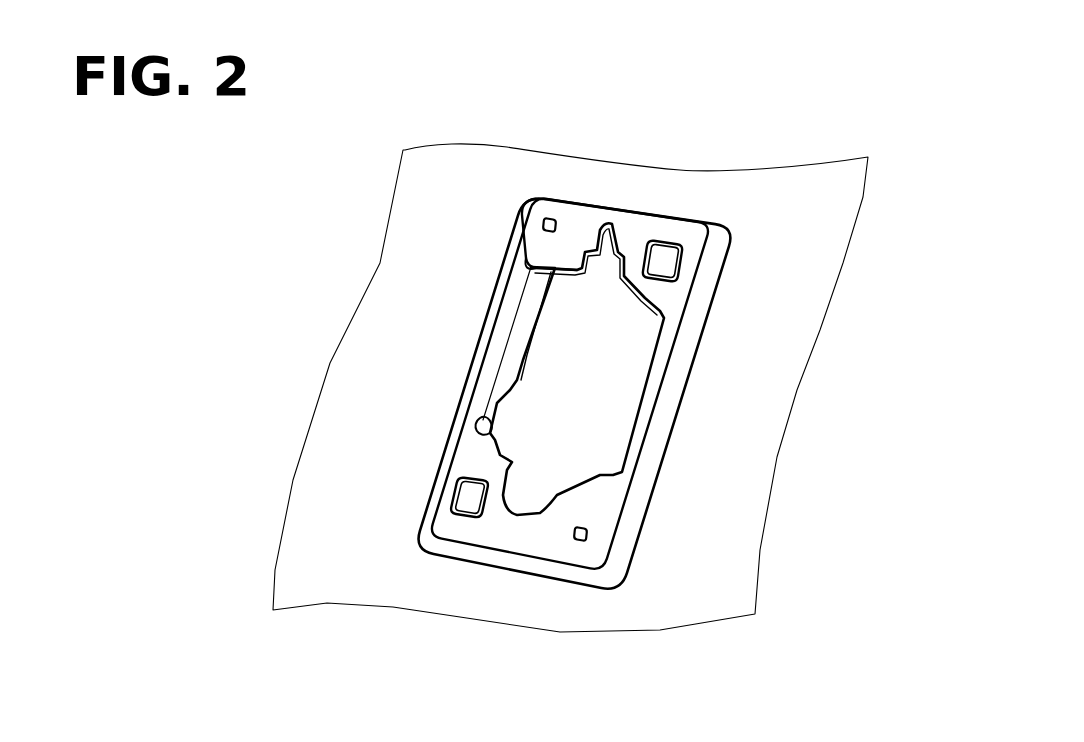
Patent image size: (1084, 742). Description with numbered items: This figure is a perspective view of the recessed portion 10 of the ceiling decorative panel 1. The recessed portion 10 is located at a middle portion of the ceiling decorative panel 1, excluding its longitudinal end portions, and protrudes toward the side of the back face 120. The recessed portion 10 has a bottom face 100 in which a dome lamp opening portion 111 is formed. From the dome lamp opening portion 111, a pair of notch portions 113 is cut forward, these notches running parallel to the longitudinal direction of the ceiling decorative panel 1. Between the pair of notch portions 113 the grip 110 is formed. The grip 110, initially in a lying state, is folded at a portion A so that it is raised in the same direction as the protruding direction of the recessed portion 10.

The ceiling decorative panel 1 is at (703, 584).
The recessed portion 10 is at (603, 283).
The bottom face 100 is at (552, 537).
The grip 110 is at (498, 287).
The dome lamp opening portion 111 is at (598, 362).
The notch portions 113 is at (527, 262).
The back face 120 is at (612, 503).
The portion A is at (505, 352).